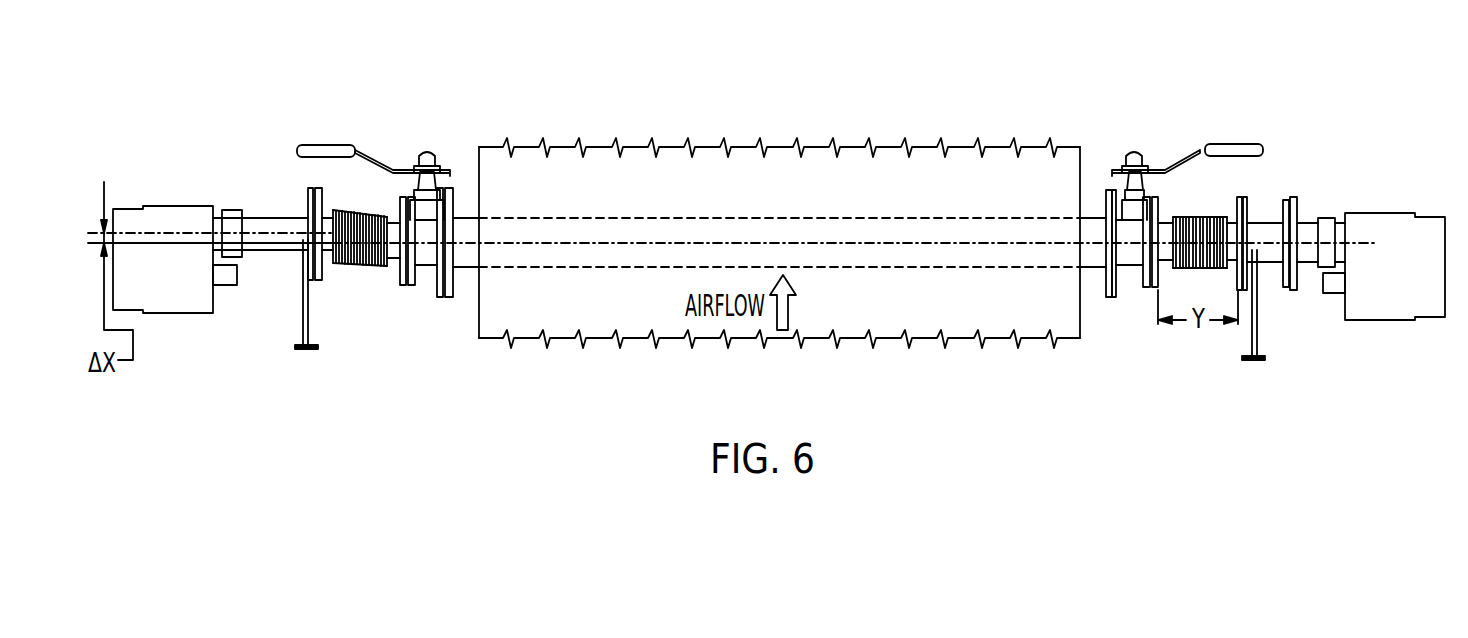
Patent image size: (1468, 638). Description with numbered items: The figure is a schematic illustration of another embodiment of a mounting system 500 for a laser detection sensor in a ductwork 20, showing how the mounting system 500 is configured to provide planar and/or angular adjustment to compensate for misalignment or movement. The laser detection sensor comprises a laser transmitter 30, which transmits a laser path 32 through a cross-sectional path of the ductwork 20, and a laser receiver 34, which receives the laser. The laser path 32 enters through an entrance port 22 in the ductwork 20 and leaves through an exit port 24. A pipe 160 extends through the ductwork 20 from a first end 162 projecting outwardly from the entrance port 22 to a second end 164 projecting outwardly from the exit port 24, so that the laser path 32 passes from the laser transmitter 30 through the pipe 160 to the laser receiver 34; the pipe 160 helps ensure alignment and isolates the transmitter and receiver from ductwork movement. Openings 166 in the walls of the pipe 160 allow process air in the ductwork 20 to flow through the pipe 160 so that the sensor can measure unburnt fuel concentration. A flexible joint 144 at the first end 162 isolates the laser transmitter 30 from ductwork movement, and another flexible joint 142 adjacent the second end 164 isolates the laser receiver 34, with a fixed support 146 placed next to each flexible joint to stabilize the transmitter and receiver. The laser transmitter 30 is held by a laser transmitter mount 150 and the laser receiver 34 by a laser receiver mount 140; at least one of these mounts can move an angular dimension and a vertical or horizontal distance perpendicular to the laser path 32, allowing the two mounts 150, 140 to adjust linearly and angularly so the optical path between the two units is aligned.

The mounting system 500 is at (880, 92).
The laser transmitter mount 150 is at (462, 113).
The laser receiver mount 140 is at (1345, 138).
The entrance port 22 is at (487, 217).
The pipe 160 is at (627, 217).
The laser path 32 is at (735, 240).
The exit port 24 is at (1082, 218).
The flexible joint 142 is at (1203, 217).
The flexible joint 144 is at (355, 263).
The fixed support 146 is at (308, 330).
The first end 162 is at (476, 268).
The second end 164 is at (1085, 270).
The openings 166 is at (585, 268).
The ductwork 20 is at (958, 320).
The laser transmitter 30 is at (178, 313).
The laser receiver 34 is at (1397, 320).